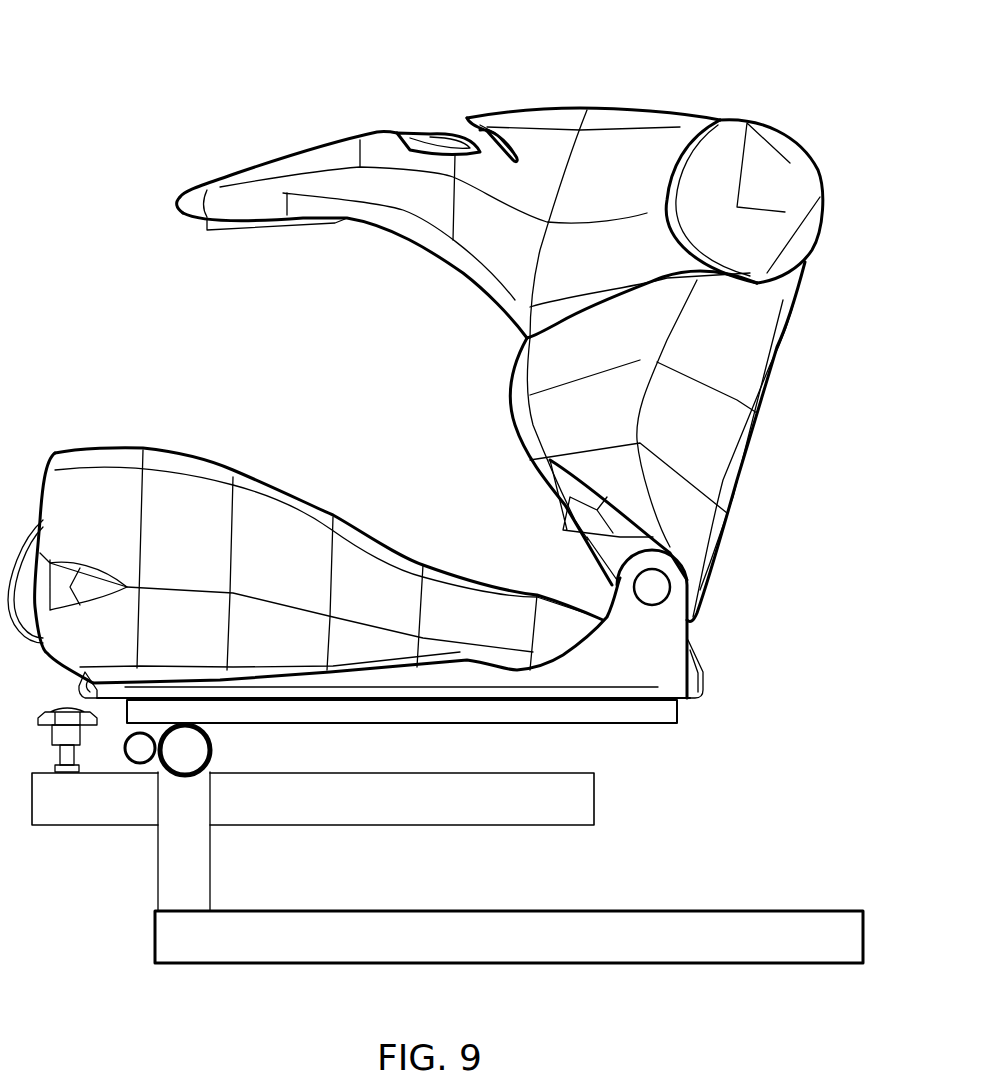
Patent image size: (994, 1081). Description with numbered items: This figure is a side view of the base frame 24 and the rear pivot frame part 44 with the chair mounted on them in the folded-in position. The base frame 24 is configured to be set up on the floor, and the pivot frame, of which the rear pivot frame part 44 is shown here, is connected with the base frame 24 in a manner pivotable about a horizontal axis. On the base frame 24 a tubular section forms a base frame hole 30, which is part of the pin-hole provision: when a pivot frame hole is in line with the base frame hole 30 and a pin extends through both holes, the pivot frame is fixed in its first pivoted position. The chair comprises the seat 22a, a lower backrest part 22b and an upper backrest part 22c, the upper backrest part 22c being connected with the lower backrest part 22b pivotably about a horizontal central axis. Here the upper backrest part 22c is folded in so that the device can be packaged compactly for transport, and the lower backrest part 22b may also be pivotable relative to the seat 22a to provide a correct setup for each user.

The seat 22a is at (270, 530).
The lower backrest part 22b is at (702, 447).
The upper backrest part 22c is at (612, 155).
The base frame hole 30 is at (142, 748).
The rear pivot frame part 44 is at (543, 807).
The base frame 24 is at (637, 942).